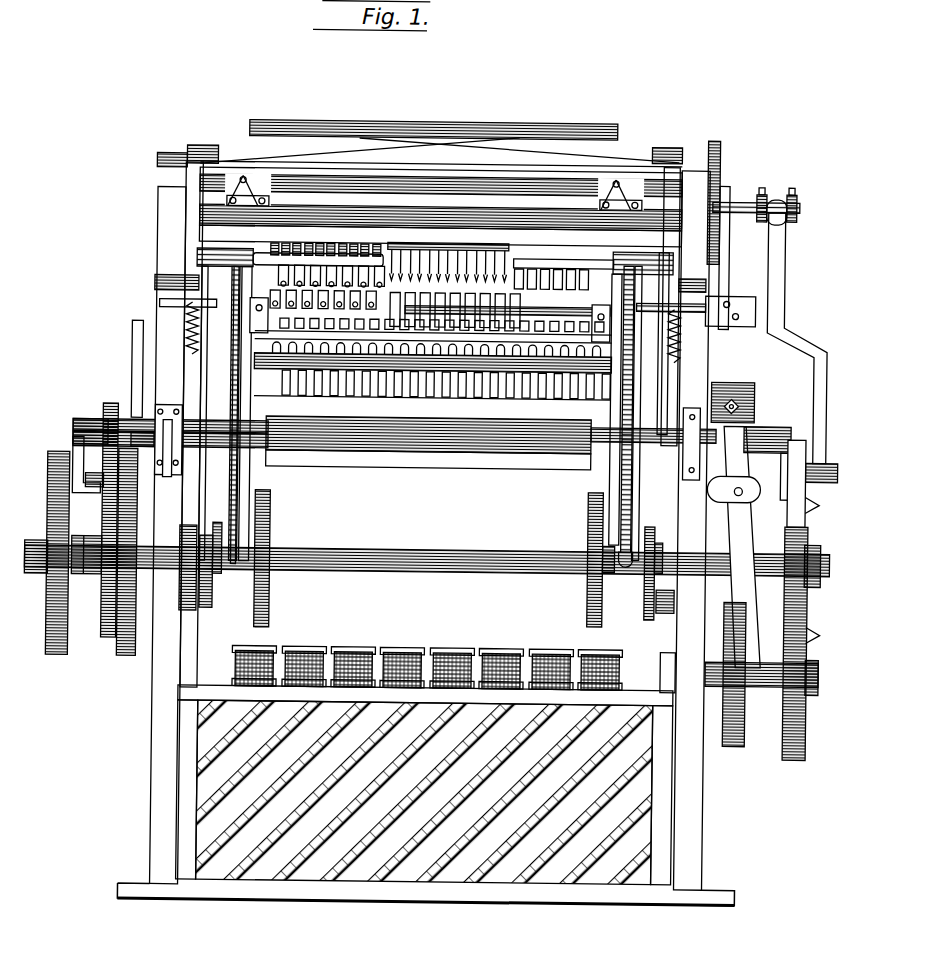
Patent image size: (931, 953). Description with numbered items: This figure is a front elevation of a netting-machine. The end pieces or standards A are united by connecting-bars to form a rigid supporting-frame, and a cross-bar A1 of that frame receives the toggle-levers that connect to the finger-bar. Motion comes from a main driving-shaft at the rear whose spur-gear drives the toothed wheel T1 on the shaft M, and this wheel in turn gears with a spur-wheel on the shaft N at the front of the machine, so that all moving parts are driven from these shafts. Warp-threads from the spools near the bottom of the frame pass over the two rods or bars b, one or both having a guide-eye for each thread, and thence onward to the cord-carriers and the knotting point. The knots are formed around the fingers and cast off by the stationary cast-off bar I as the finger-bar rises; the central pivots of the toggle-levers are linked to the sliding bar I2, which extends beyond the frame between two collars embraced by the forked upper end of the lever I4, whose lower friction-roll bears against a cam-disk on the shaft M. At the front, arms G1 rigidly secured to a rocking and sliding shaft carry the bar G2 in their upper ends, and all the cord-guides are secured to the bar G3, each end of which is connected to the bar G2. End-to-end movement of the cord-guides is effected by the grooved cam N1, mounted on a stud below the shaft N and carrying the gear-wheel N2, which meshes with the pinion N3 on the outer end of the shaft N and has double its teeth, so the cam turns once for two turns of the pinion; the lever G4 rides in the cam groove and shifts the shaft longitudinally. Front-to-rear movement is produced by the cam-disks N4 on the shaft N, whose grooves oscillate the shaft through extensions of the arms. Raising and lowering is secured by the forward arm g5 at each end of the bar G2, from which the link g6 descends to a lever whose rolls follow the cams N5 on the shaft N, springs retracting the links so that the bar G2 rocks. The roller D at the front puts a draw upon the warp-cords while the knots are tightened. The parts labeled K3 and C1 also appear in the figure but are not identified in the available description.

The end pieces or standards A is at (154, 752).
The top plate K3 is at (264, 121).
The cross-bar A1 is at (441, 152).
The bar I2 is at (211, 203).
The cast-off bar I is at (211, 240).
The bar G2 is at (194, 258).
The arms G1 is at (225, 413).
The bar G3 is at (644, 417).
The rods or bars b is at (422, 357).
The roller D is at (395, 443).
The shaft M is at (78, 548).
The toothed wheel T1 is at (118, 552).
The shaft N is at (412, 563).
The cams N5 is at (218, 583).
The cam-disks N4 is at (584, 616).
The link g6 is at (430, 417).
The spools C1 is at (440, 650).
The arm g5 is at (715, 270).
The lever I4 is at (788, 333).
The lever G4 is at (748, 525).
The pinion N3 is at (790, 514).
The gear-wheel N2 is at (798, 661).
The grooved cam N1 is at (770, 752).